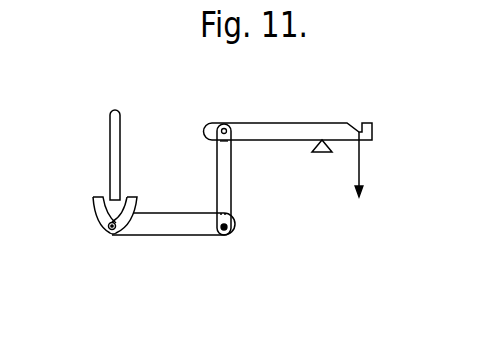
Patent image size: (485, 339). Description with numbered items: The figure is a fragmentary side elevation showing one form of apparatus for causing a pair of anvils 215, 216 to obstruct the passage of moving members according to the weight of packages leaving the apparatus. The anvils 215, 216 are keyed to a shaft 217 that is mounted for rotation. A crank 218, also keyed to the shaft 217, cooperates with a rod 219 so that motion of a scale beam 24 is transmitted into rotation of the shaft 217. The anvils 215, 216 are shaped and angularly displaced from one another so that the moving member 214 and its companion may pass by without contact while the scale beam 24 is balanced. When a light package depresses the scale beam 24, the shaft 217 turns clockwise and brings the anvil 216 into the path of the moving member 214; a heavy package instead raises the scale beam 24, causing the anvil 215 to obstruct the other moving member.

The scale beam 24 is at (286, 124).
The moving member 214 is at (110, 133).
The anvil 215 is at (133, 196).
The anvil 216 is at (95, 198).
The shaft 217 is at (110, 237).
The crank 218 is at (172, 232).
The rod 219 is at (230, 178).